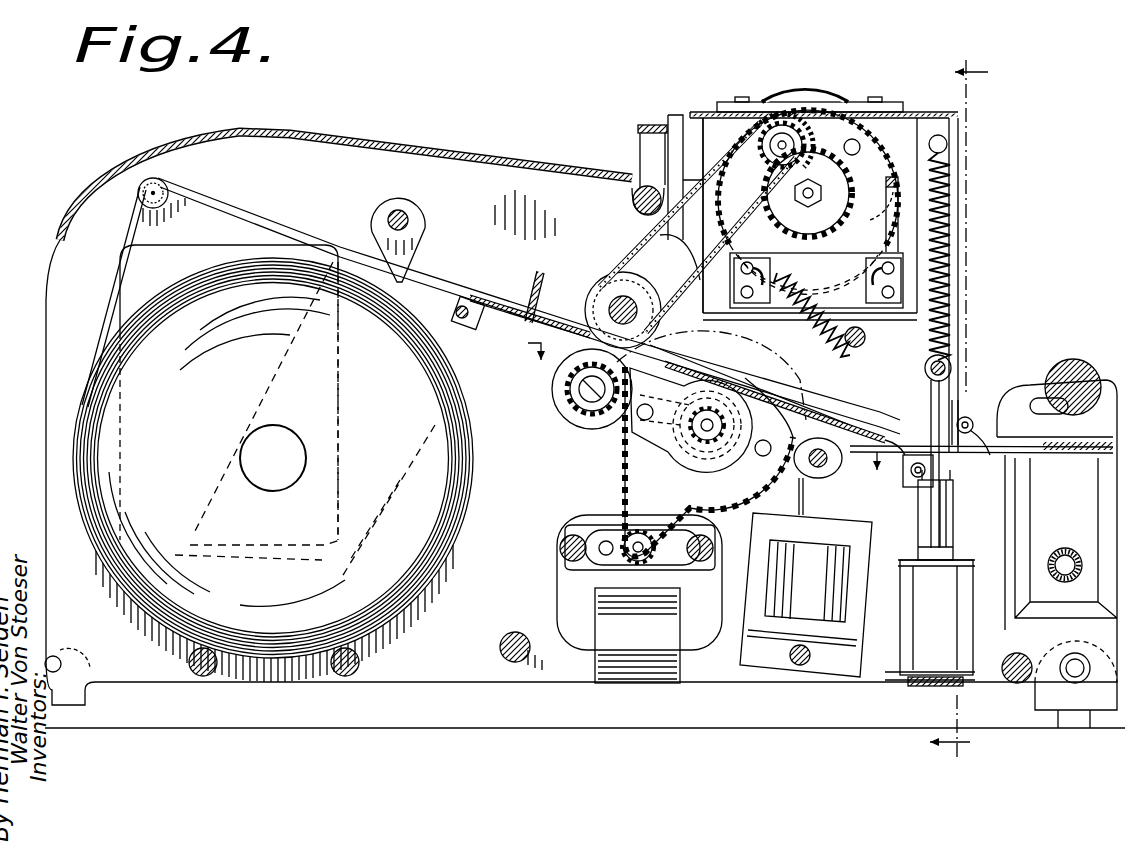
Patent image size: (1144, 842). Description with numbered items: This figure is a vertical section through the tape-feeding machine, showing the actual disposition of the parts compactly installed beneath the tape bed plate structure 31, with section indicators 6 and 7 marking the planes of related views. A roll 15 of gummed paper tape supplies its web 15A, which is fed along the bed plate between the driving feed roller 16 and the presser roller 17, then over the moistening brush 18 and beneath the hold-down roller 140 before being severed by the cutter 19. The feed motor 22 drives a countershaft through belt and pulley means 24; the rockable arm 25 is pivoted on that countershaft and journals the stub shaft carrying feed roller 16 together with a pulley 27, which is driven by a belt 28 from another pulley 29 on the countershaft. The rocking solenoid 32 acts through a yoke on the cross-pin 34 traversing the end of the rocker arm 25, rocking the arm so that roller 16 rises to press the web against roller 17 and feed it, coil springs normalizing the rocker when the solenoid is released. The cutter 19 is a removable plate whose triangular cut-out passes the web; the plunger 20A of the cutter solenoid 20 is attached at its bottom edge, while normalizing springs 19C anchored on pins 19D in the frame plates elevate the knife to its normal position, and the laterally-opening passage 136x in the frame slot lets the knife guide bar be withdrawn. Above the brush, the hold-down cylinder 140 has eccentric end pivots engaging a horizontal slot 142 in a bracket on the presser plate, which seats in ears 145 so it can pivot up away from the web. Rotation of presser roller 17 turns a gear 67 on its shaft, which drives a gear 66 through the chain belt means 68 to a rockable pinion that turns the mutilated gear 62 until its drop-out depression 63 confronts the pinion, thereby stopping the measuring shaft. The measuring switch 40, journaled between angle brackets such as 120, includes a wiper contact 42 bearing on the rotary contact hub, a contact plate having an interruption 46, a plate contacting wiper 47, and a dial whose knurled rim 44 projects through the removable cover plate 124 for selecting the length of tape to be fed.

The section line 6- 6 is at (968, 410).
The section line 7- 7 is at (700, 413).
The roll of gummed paper tape 15 is at (412, 522).
The tape web 15A is at (452, 282).
The driving feed roller 16 is at (555, 393).
The presser roller 17 is at (608, 290).
The moistening brush 18 is at (1100, 458).
The shearing blade or cutter 19 is at (927, 398).
The normalizing springs 19C is at (946, 338).
The anchor pins 19D is at (948, 145).
The cutter solenoid 20 is at (976, 566).
The solenoid plunger 20A is at (930, 508).
The feed motor 22 is at (560, 580).
The belt and pulley means 24 is at (642, 532).
The rockable arm 25 is at (797, 470).
The pulley 27 is at (568, 410).
The belt 28 is at (626, 425).
The pulley 29 is at (692, 445).
The tape bed plate structure 31 is at (836, 466).
The rocking solenoid 32 is at (836, 560).
The cross-pin 34 is at (811, 496).
The measuring switch 40 is at (826, 84).
The wiper contact 42 is at (760, 228).
The knurled rim portion 44 is at (822, 100).
The interruption or hole 46 is at (861, 150).
The plate contacting wiper 47 is at (882, 200).
The mutilated gear 62 is at (838, 226).
The drop-out depression 63 is at (844, 137).
The gear 66 is at (776, 130).
The gear 67 is at (650, 292).
The chain belt means 68 is at (662, 222).
The angle bracket 120 is at (905, 135).
The removable cover plate 124 is at (903, 108).
The laterally-opening passage 136x is at (966, 392).
The hold-down roller 140 is at (1080, 360).
The horizontal slot 142 is at (1035, 398).
The ears 145 is at (972, 424).